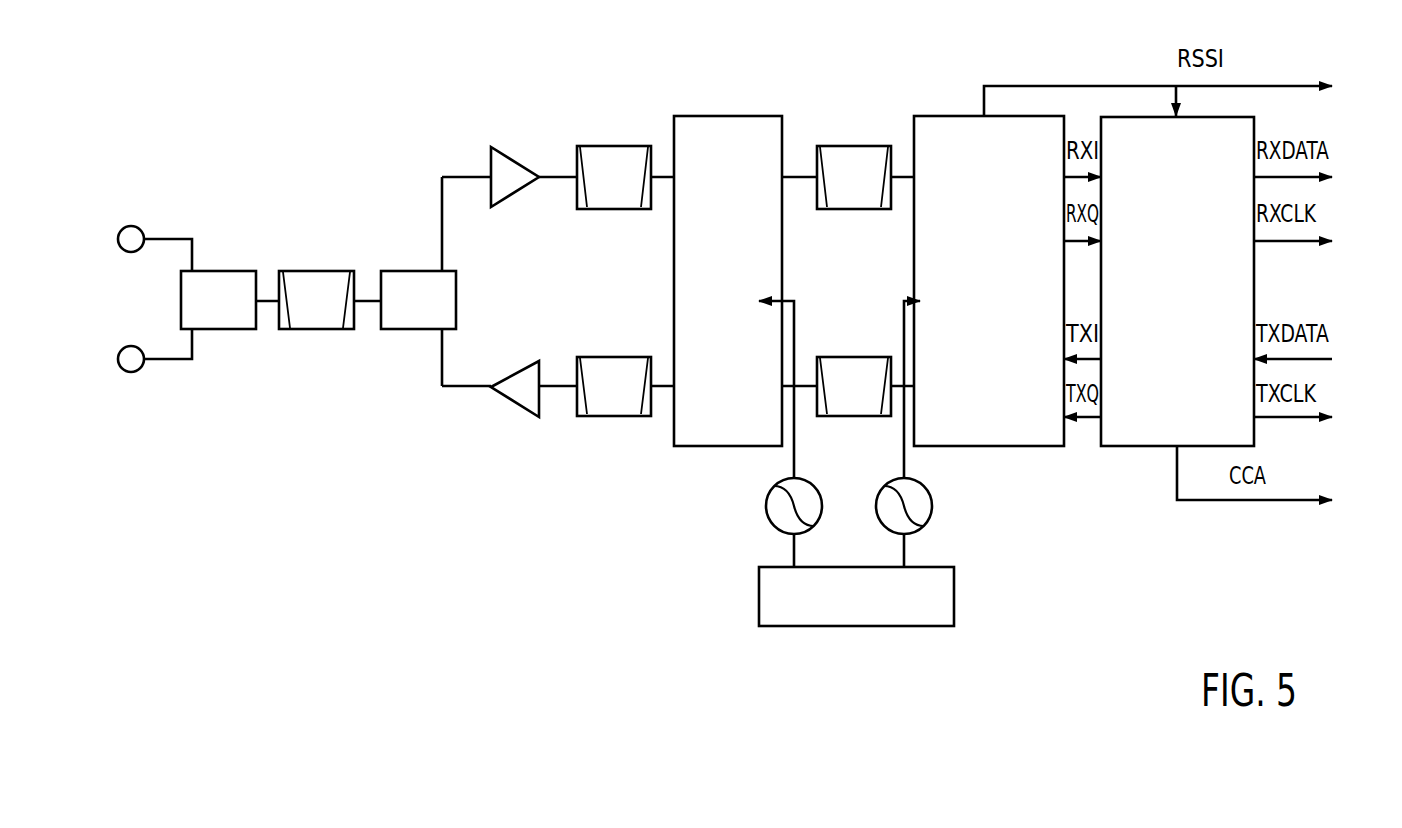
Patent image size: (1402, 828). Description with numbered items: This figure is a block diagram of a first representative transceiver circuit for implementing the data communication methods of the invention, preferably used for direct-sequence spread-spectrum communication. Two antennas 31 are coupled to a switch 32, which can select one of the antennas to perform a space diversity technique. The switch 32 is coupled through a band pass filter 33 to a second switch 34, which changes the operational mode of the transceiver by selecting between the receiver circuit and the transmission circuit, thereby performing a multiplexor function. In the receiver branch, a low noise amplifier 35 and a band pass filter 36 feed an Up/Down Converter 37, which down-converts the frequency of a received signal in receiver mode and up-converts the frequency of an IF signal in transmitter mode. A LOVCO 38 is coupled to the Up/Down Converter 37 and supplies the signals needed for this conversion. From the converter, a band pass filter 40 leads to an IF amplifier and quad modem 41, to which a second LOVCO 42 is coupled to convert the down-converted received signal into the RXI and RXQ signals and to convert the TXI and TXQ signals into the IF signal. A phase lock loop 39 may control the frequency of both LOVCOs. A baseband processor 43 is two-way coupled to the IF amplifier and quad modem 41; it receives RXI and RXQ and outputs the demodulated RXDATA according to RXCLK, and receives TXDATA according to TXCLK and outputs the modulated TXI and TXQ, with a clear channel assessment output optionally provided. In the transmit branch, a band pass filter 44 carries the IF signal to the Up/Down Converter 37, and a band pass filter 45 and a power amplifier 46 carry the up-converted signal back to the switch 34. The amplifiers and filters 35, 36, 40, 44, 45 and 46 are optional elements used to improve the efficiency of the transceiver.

The antennas 31 is at (110, 123).
The switch 32 is at (223, 332).
The band pass filter 33 is at (318, 332).
The switch 34 is at (422, 332).
The low noise amplifier 35 is at (512, 148).
The band pass filter 36 is at (613, 147).
The Up/Down Converter 37 is at (718, 117).
The LOVCO 38 is at (772, 492).
The phase lock loop 39 is at (855, 627).
The band pass filter 40 is at (853, 147).
The IF amplifier and quad modem 41 is at (943, 117).
The LOVCO 42 is at (928, 490).
The baseband processor 43 is at (1145, 447).
The band pass filter 44 is at (853, 358).
The band pass filter 45 is at (615, 417).
The power amplifier 46 is at (513, 407).